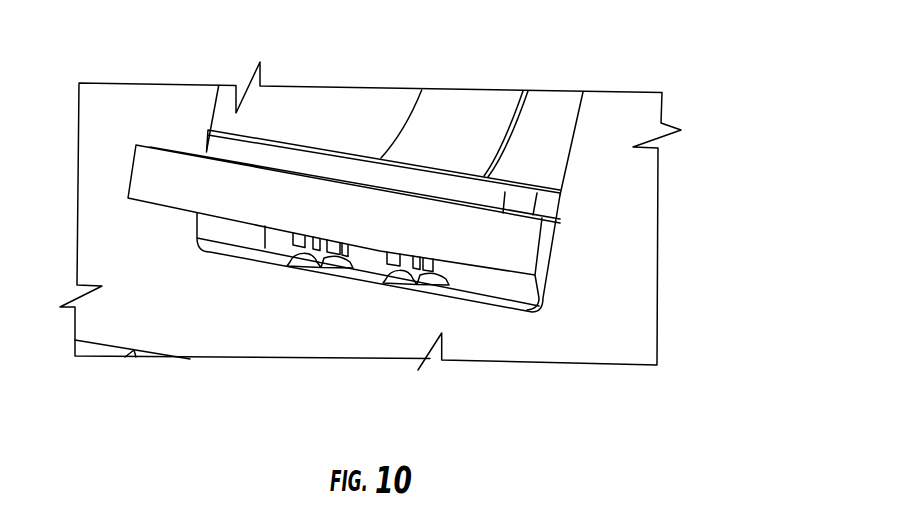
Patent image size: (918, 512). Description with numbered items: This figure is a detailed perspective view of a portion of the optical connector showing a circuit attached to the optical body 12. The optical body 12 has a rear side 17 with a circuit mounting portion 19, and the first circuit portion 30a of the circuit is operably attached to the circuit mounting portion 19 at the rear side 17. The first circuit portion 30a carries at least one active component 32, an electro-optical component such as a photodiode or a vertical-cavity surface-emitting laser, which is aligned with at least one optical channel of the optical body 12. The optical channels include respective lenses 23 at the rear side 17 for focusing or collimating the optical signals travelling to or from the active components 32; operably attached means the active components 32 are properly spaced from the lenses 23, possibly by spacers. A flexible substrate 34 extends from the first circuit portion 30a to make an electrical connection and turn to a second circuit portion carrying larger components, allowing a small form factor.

The optical body 12 is at (615, 318).
The rear side 17 is at (265, 122).
The circuit mounting portion 19 is at (211, 240).
The lenses 23 is at (303, 262).
The first circuit portion 30a is at (465, 230).
The active component 32 is at (340, 248).
The flexible substrate 34 is at (492, 104).